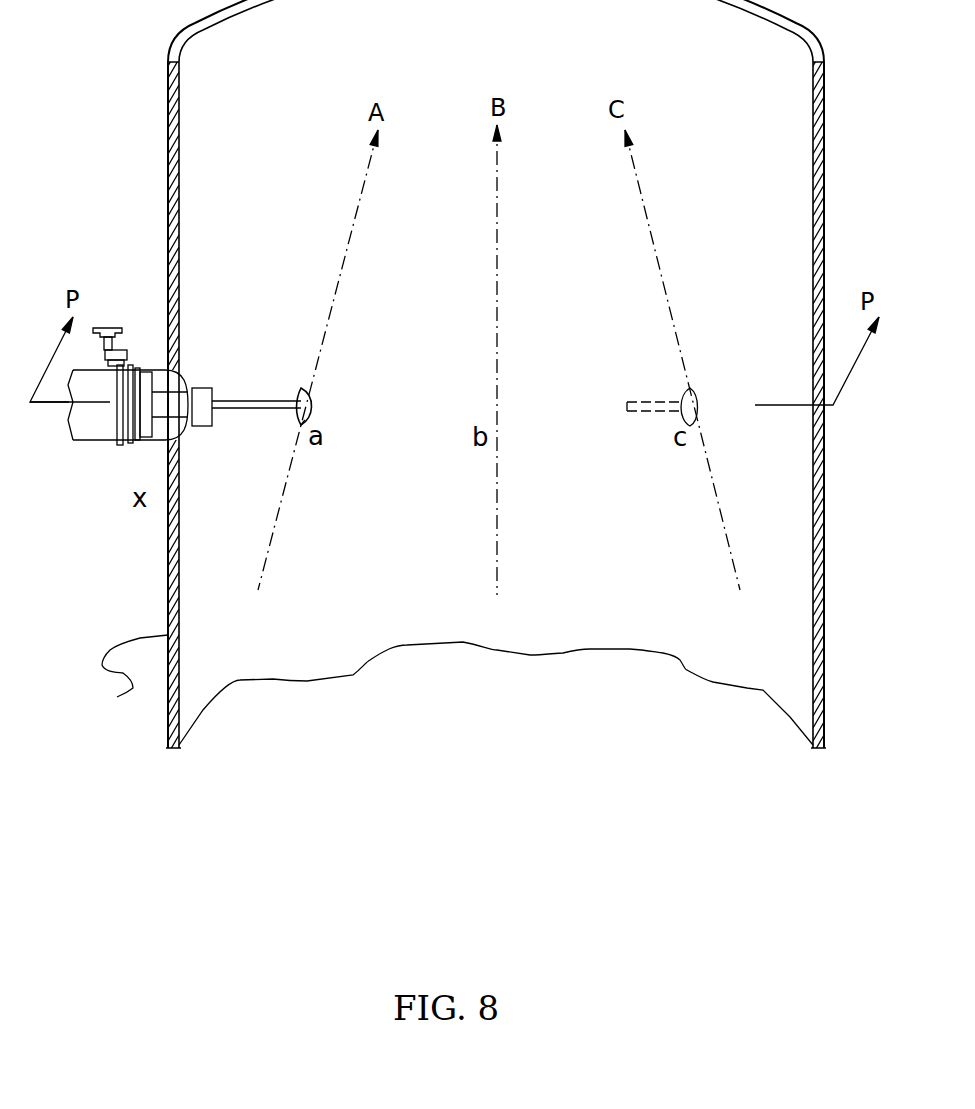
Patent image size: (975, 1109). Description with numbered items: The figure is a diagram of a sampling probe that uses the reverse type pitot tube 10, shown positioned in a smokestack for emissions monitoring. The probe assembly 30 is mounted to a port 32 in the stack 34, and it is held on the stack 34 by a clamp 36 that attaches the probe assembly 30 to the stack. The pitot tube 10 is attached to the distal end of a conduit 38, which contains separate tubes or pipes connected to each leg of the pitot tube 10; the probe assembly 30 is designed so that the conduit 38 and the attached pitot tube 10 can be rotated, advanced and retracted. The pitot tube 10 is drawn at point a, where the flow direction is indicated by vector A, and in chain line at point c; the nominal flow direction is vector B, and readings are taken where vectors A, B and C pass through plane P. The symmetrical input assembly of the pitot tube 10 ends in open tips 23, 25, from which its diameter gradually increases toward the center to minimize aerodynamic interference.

The pitot tube 10 is at (243, 410).
The open tip 23 is at (303, 388).
The open tip 25 is at (305, 426).
The probe assembly 30 is at (87, 440).
The port 32 is at (150, 443).
The stack 34 is at (117, 697).
The clamp 36 is at (100, 327).
The conduit 38 is at (195, 388).